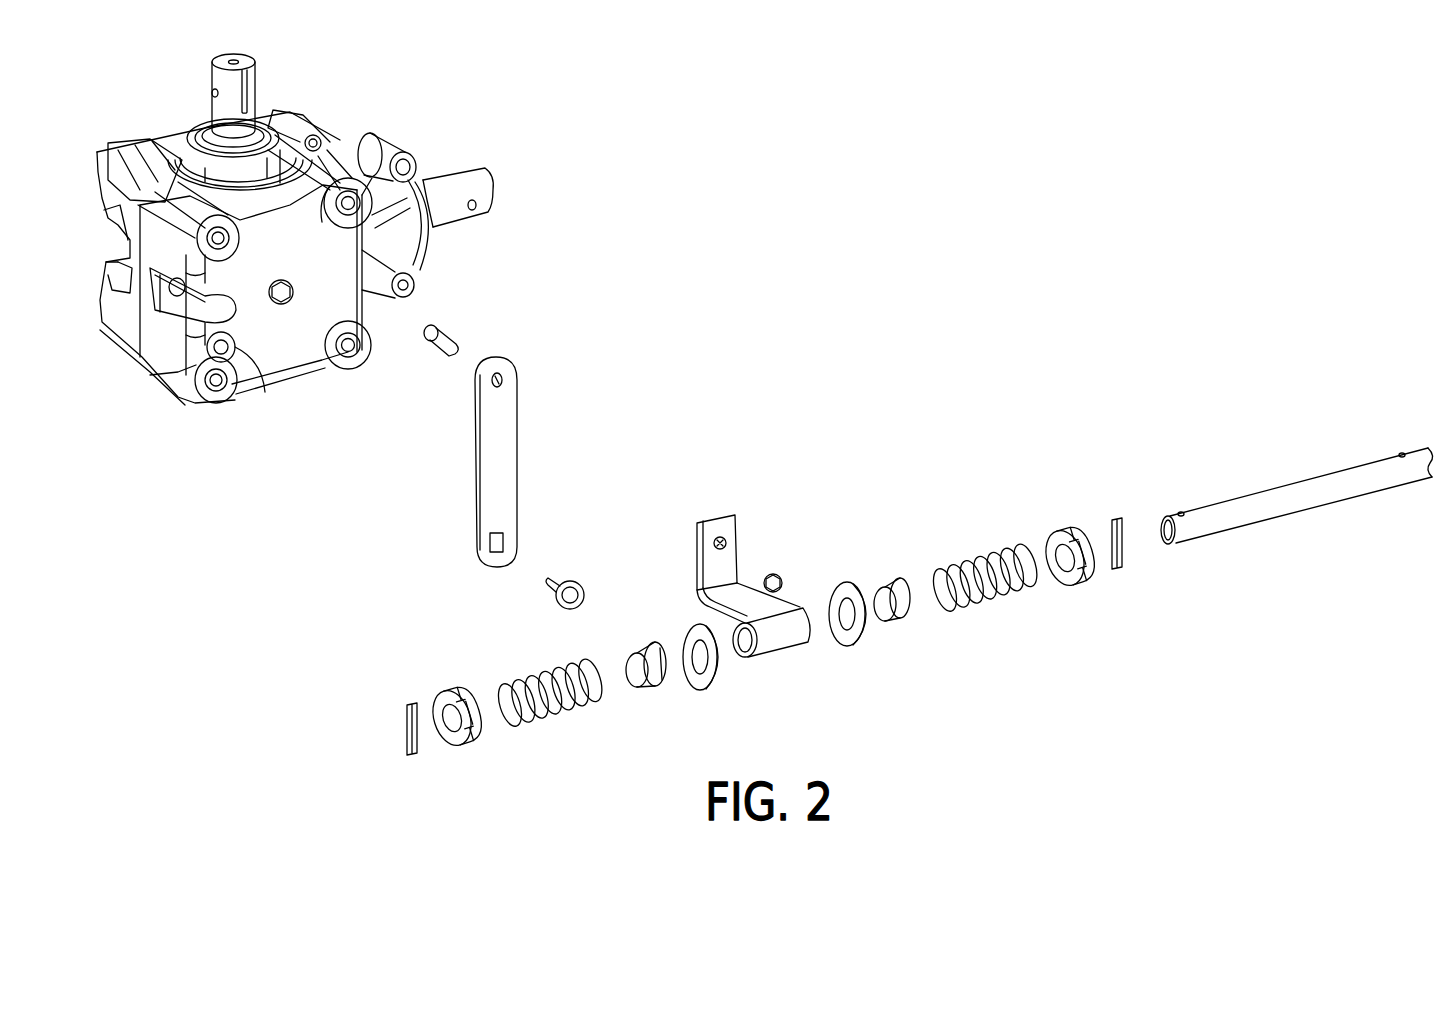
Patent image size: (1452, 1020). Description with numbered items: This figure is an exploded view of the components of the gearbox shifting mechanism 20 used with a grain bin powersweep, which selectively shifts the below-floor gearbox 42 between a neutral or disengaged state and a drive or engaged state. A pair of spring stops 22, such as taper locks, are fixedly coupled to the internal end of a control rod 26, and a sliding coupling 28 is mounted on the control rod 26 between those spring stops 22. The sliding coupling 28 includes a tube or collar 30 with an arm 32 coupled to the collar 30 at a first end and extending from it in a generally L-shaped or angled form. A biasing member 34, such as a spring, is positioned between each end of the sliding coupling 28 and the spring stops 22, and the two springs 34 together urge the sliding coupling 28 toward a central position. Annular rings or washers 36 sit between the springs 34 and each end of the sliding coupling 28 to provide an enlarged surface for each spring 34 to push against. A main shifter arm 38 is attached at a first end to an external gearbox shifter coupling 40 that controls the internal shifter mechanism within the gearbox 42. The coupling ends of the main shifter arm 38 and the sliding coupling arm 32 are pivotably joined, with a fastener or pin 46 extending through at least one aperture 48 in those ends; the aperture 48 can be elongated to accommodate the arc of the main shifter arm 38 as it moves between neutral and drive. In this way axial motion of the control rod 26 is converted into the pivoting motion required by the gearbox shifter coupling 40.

The gearbox shifting mechanism 20 is at (900, 308).
The spring stop 22 is at (452, 685).
The control rod 26 is at (1202, 512).
The sliding coupling 28 is at (680, 570).
The collar 30 is at (780, 643).
The arm 32 is at (720, 563).
The biasing member 34 is at (562, 710).
The washer 36 is at (708, 675).
The main shifter arm 38 is at (500, 458).
The gearbox shifter coupling 40 is at (262, 400).
The gearbox 42 is at (275, 348).
The fastener 46 is at (442, 345).
The aperture 48 is at (500, 380).